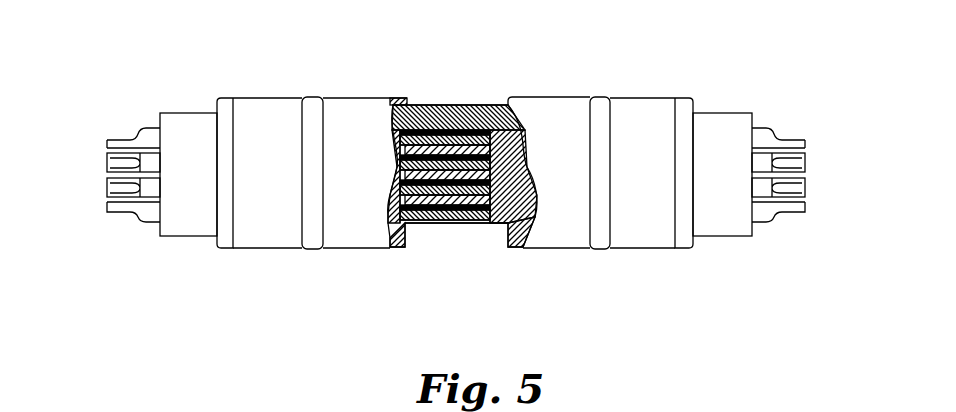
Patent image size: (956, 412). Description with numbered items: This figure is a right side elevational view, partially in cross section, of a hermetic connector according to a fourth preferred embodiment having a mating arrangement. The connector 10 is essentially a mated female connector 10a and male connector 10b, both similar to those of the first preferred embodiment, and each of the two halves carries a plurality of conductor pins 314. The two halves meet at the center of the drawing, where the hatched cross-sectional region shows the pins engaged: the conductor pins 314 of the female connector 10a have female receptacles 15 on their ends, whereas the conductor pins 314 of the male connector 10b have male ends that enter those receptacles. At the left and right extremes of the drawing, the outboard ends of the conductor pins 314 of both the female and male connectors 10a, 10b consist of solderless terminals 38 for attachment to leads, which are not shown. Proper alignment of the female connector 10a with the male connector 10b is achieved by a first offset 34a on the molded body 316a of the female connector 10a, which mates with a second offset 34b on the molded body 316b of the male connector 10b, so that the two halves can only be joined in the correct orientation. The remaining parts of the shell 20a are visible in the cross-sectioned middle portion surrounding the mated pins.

The connector 10 is at (448, 177).
The female connector 10a is at (679, 186).
The male connector 10b is at (226, 174).
The female receptacles 15 is at (485, 224).
The shell 20a is at (459, 158).
The first offset 34a is at (469, 118).
The second offset 34b is at (392, 104).
The solderless terminals 38 is at (115, 162).
The conductor pins 314 is at (434, 130).
The molded body 316a is at (632, 249).
The molded body 316b is at (360, 249).